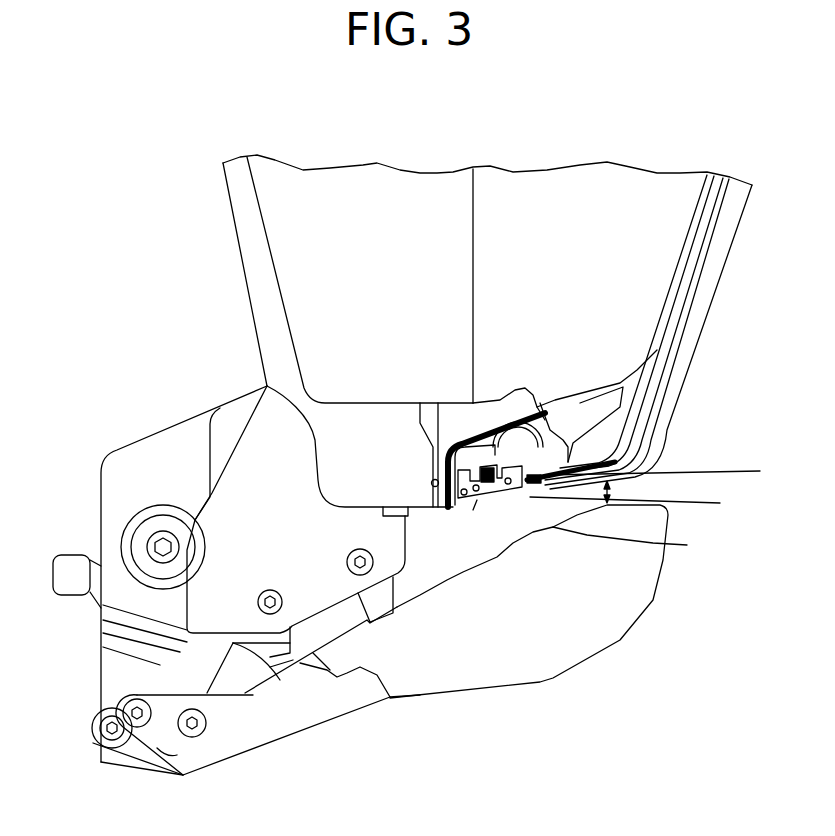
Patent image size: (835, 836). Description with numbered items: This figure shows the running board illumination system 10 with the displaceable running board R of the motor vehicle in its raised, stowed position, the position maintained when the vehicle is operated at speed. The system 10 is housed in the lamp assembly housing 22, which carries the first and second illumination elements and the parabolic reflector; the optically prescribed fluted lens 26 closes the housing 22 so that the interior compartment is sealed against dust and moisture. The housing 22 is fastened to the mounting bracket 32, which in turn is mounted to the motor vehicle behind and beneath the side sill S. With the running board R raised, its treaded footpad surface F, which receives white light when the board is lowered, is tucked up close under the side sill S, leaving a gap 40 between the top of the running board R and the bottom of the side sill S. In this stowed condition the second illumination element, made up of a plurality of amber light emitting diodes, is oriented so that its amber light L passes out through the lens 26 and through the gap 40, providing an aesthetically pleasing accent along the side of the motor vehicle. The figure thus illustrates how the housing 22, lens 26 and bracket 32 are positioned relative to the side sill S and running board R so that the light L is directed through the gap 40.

The running board illumination system 10 is at (508, 462).
The lamp assembly housing 22 is at (467, 472).
The optically prescribed fluted lens 26 is at (477, 503).
The mounting bracket 32 is at (448, 427).
The gap 40 is at (612, 493).
The side sill S is at (637, 470).
The light L is at (695, 485).
The treaded footpad surface F is at (549, 567).
The running board R is at (623, 573).